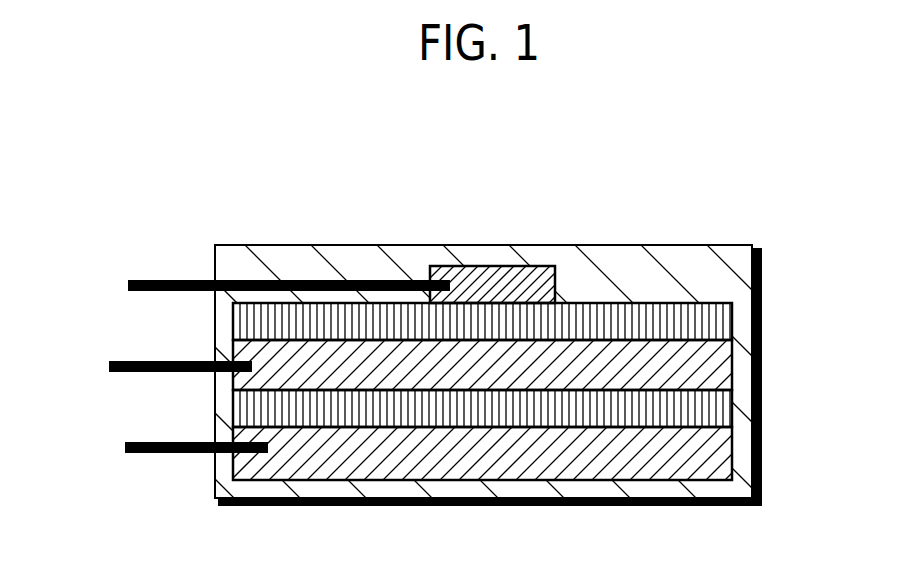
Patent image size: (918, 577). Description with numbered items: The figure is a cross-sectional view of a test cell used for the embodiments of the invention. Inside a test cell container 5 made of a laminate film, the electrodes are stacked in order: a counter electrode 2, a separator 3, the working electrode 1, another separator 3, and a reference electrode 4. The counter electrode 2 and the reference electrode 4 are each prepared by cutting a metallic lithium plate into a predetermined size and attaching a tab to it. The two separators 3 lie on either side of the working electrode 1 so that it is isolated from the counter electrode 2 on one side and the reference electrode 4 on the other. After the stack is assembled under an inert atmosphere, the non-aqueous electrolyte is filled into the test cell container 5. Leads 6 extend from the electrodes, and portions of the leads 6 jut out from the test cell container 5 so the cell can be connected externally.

The working electrode 1 is at (705, 360).
The counter electrode 2 is at (712, 455).
The separator 3 is at (712, 320).
The reference electrode 4 is at (507, 270).
The test cell container 5 is at (263, 245).
The lead 6 is at (143, 440).